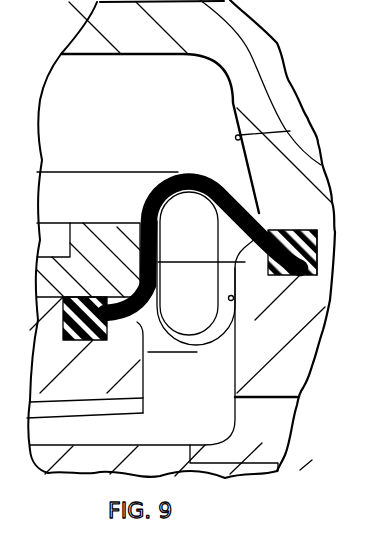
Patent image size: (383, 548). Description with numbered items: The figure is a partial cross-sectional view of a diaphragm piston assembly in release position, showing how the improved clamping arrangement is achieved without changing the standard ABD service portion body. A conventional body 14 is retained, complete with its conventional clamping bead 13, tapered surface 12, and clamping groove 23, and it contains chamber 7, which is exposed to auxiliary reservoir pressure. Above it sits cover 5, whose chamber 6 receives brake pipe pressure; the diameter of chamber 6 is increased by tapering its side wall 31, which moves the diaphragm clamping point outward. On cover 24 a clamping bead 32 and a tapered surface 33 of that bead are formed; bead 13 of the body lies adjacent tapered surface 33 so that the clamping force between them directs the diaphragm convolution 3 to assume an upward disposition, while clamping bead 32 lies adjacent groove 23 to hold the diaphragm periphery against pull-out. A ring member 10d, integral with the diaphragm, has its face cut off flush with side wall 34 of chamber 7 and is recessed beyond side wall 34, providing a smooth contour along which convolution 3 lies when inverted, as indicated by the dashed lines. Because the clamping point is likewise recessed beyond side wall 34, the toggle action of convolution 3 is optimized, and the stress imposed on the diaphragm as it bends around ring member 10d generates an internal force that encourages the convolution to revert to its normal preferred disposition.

The diaphragm convolution 3 is at (213, 175).
The cover 5 is at (247, 67).
The chamber 6 is at (58, 127).
The chamber 7 is at (58, 434).
The ring member 10d is at (238, 236).
The tapered surface 12 is at (235, 247).
The clamping bead 13 is at (263, 252).
The body 14 is at (290, 366).
The clamping groove 23 is at (303, 273).
The cover 24 is at (263, 115).
The side wall 31 is at (290, 131).
The clamping bead 32 is at (298, 231).
The tapered surface 33 is at (268, 236).
The side wall 34 is at (233, 300).